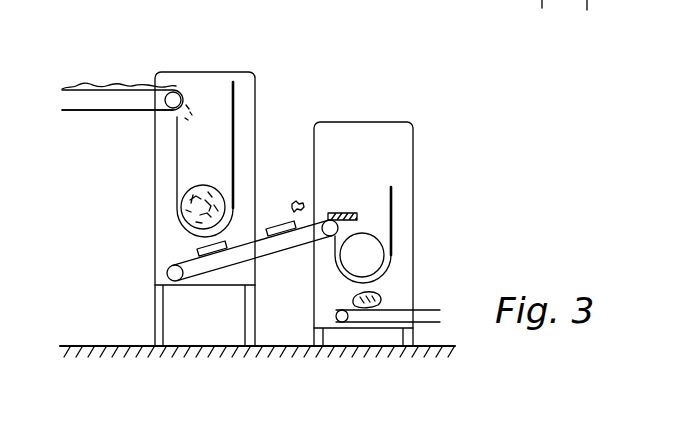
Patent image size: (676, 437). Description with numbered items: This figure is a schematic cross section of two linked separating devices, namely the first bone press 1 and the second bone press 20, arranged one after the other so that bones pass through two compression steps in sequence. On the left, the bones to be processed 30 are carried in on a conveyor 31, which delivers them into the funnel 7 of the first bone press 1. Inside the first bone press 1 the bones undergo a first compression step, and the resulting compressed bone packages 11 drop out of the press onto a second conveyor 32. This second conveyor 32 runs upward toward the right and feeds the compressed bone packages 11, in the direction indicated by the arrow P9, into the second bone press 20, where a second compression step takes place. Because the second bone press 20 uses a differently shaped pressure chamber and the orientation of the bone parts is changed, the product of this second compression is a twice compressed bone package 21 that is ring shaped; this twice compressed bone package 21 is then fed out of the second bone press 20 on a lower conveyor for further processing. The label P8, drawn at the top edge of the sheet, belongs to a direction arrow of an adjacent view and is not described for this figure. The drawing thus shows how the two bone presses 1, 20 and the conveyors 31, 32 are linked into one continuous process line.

The first bone press 1 is at (160, 211).
The funnel 7 is at (233, 122).
The compressed bone packages 11 is at (195, 248).
The second bone press 20 is at (408, 239).
The twice compressed bone package 21 is at (378, 295).
The bones to be processed 30 is at (122, 88).
The conveyor 31 is at (96, 111).
The second conveyor 32 is at (222, 265).
The position P8 is at (542, 12).
The arrow P9 is at (293, 189).